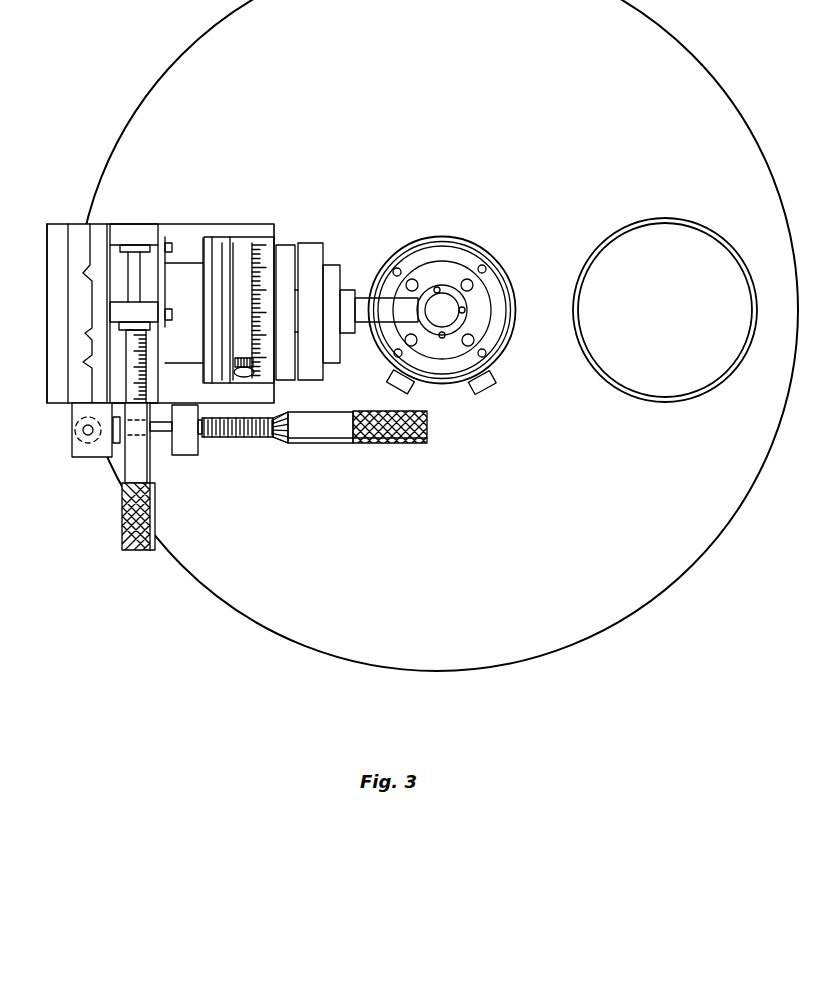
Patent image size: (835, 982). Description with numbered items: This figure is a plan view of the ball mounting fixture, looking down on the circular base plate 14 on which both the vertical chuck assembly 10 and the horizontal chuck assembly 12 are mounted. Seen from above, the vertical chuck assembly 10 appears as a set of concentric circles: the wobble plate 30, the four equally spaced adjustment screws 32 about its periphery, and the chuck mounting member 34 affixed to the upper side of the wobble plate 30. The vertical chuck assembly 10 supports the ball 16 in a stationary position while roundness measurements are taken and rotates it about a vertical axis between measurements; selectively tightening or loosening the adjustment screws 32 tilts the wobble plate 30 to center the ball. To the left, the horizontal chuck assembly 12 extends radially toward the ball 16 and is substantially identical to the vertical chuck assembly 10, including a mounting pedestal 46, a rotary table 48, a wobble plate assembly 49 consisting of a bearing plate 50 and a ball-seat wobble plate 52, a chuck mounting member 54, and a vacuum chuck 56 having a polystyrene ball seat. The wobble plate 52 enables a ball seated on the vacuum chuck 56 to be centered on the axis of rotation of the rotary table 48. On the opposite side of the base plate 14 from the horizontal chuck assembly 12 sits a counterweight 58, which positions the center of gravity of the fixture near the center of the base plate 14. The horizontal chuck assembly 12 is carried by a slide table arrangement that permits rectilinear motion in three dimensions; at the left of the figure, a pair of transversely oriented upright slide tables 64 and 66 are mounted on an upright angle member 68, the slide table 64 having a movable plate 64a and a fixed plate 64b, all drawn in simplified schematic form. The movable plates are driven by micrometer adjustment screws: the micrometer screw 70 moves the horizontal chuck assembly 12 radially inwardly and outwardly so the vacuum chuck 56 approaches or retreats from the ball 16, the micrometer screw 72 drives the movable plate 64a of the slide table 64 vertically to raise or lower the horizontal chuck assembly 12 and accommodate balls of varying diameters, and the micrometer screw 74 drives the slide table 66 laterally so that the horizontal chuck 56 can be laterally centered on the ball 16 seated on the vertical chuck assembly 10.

The vertical chuck assembly 10 is at (492, 243).
The horizontal chuck assembly 12 is at (330, 226).
The circular base plate 14 is at (293, 597).
The ball 16 is at (445, 297).
The wobble plate 30 is at (498, 325).
The adjustment screws 32 is at (483, 263).
The chuck mounting member 34 is at (473, 300).
The mounting pedestal 46 is at (185, 273).
The rotary table 48 is at (240, 238).
The wobble plate assembly 49 is at (300, 382).
The bearing plate 50 is at (283, 246).
The ball-seat wobble plate 52 is at (307, 246).
The chuck mounting member 54 is at (328, 268).
The vacuum chuck 56 is at (382, 308).
The counterweight 58 is at (655, 368).
The upright slide table 64 is at (60, 340).
The movable plate 64a is at (98, 232).
The fixed plate 64b is at (76, 232).
The upright slide table 66 is at (133, 218).
The upright angle member 68 is at (56, 232).
The micrometer adjustment screw 70 is at (377, 445).
The micrometer adjustment screw 72 is at (90, 445).
The micrometer adjustment screw 74 is at (118, 523).